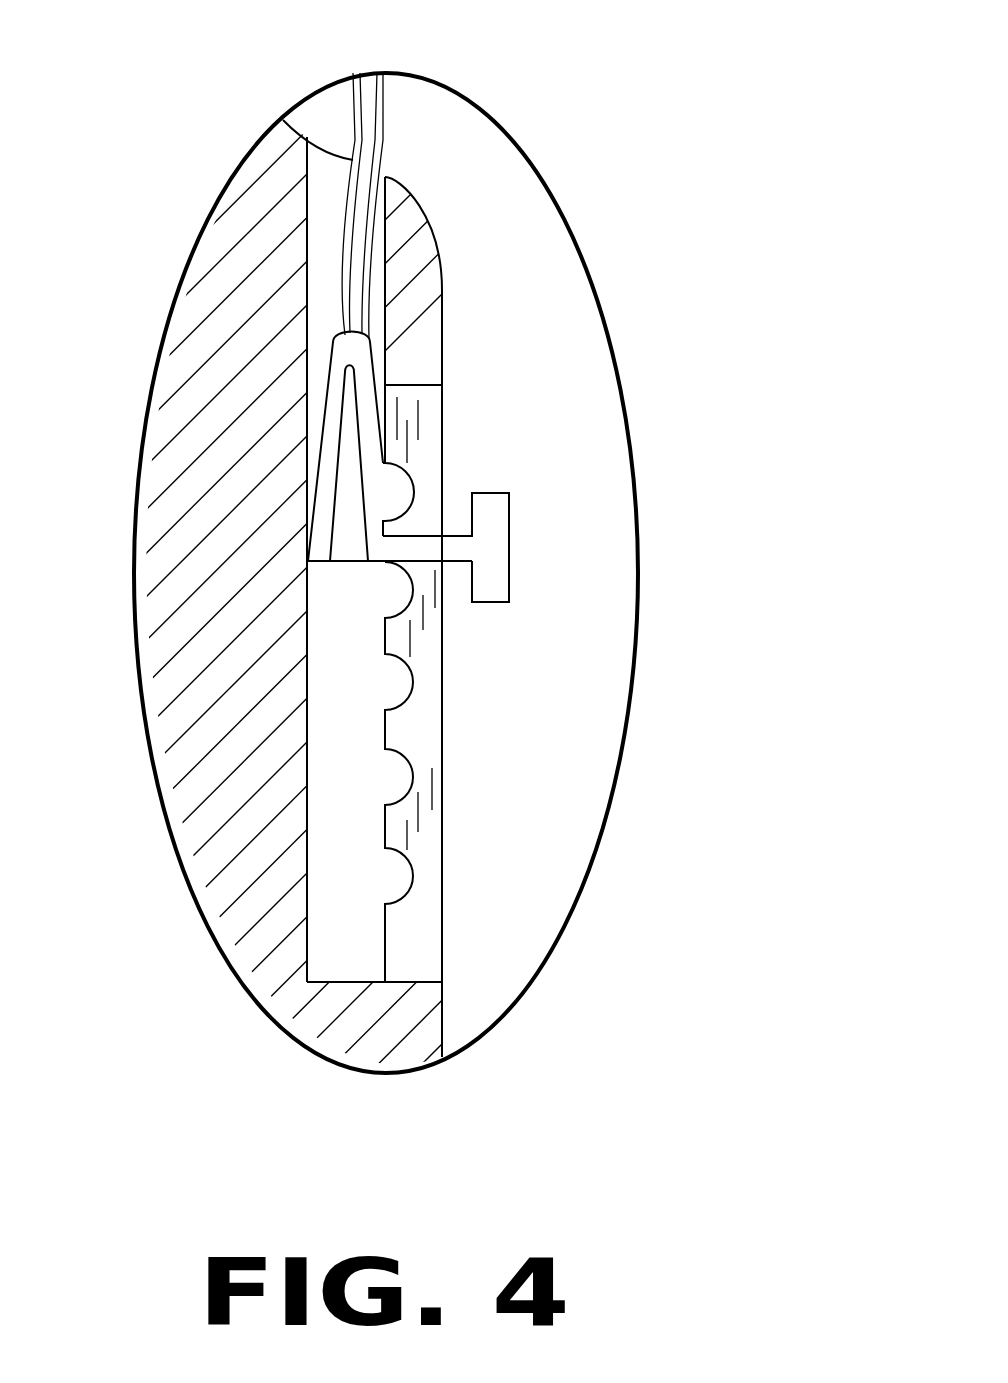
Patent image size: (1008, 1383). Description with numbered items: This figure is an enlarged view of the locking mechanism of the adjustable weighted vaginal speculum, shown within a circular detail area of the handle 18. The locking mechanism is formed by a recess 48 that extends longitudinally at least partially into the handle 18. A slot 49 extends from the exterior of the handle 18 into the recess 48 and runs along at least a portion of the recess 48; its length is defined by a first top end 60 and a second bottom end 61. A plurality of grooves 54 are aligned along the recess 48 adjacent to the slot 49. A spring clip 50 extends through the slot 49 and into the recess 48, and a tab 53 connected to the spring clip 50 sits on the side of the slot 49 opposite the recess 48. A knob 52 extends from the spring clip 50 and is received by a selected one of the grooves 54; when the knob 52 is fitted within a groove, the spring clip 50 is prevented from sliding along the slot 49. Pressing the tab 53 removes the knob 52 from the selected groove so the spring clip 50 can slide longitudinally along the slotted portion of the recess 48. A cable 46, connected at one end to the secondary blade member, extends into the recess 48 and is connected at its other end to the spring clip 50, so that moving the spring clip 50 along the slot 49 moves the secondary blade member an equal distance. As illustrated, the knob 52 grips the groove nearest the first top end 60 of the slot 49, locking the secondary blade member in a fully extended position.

The handle 18 is at (210, 358).
The cable 46 is at (367, 142).
The recess 48 is at (368, 873).
The slot 49 is at (455, 653).
The spring clip 50 is at (367, 425).
The knob 52 is at (385, 492).
The tab 53 is at (510, 548).
The plurality of grooves 54 is at (417, 723).
The first top end 60 is at (430, 392).
The second bottom end 61 is at (400, 980).